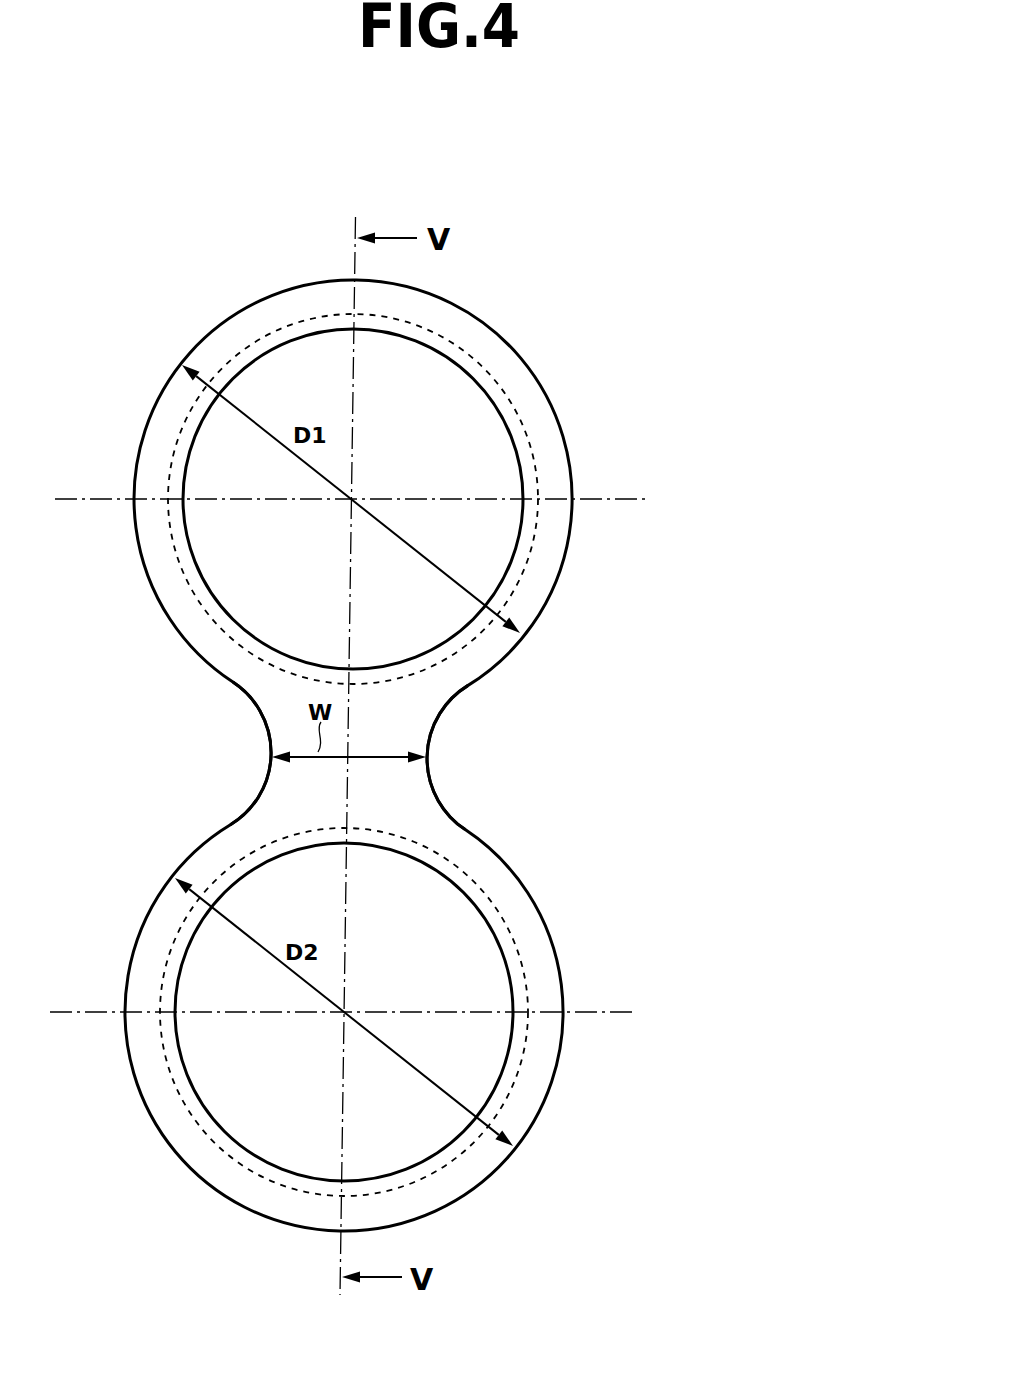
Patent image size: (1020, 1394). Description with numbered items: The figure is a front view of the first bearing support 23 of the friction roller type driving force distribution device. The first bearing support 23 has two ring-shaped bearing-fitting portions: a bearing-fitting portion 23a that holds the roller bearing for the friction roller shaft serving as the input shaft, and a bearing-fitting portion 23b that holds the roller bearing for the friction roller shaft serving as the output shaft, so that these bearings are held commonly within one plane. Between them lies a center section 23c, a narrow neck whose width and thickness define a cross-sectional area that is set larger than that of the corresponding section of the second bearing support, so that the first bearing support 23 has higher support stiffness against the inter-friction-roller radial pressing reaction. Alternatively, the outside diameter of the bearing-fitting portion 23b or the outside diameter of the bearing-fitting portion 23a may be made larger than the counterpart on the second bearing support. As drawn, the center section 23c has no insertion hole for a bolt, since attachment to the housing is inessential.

The first bearing support 23 is at (570, 283).
The bearing-fitting portion 23a is at (498, 383).
The bearing-fitting portion 23b is at (488, 891).
The center section 23c is at (385, 735).